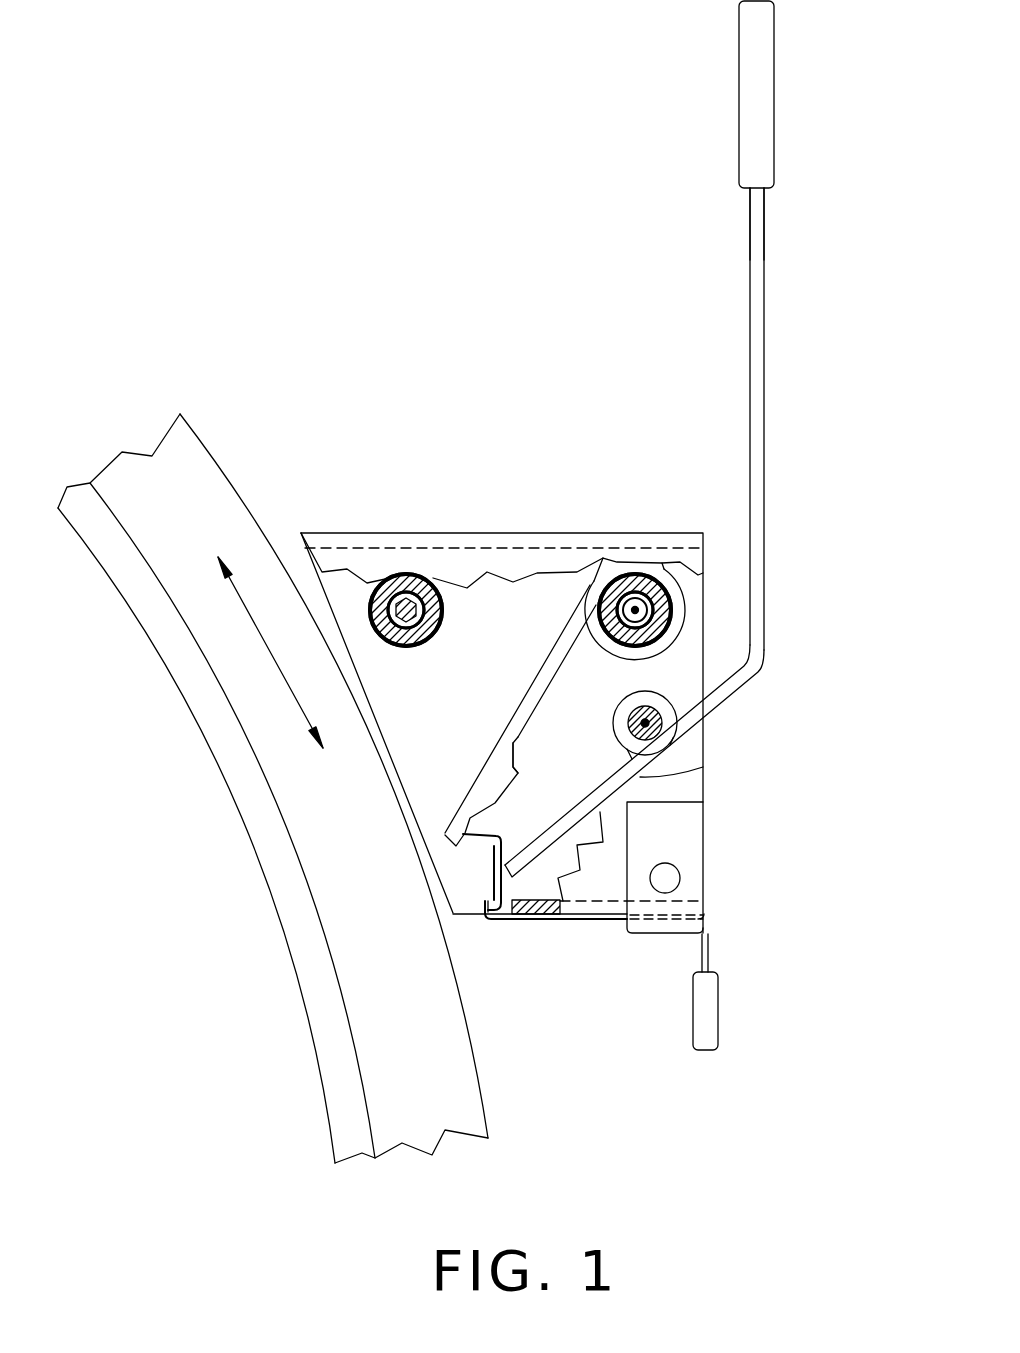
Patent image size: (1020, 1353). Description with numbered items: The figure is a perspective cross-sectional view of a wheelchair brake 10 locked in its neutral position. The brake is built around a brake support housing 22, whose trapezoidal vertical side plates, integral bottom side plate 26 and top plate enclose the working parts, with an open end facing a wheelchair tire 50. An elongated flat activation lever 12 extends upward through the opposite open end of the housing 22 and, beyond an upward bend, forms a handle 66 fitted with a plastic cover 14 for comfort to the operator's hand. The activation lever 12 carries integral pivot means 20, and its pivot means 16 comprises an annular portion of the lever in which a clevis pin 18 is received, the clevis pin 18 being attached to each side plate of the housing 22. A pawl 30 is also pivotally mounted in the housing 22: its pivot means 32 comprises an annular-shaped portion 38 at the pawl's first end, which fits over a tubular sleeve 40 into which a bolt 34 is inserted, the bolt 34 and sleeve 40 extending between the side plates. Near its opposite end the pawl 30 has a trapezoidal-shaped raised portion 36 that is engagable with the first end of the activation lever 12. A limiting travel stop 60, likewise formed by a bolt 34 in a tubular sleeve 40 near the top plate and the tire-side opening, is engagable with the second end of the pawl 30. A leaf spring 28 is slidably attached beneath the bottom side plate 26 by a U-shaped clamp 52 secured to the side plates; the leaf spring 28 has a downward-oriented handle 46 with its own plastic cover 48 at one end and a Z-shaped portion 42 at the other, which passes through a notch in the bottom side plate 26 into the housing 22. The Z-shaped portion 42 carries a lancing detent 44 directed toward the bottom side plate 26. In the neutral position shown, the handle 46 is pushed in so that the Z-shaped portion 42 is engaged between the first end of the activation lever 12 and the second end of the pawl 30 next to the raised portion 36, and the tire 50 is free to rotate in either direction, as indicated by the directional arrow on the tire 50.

The wheelchair brake 10 is at (583, 438).
The activation lever 12 is at (764, 460).
The plastic cover 14 is at (774, 63).
The pivot means 16 is at (648, 725).
The clevis pin 18 is at (671, 715).
The pivot means 20 is at (630, 694).
The brake support housing 22 is at (704, 787).
The bottom side plate 26 is at (547, 917).
The leaf spring 28 is at (590, 921).
The pawl 30 is at (487, 763).
The pivot means 32 is at (672, 622).
The bolt 34 is at (400, 648).
The trapezoidal-shaped raised portion 36 is at (518, 770).
The annular-shaped portion 38 is at (685, 648).
The tubular sleeve 40 is at (440, 624).
The Z-shaped portion 42 is at (479, 921).
The lancing detent 44 is at (494, 864).
The handle 46 is at (709, 932).
The plastic cover 48 is at (724, 1008).
The wheelchair tire 50 is at (484, 1070).
The U-shaped clamp 52 is at (688, 853).
The limiting travel stop 60 is at (373, 588).
The handle 66 is at (763, 210).